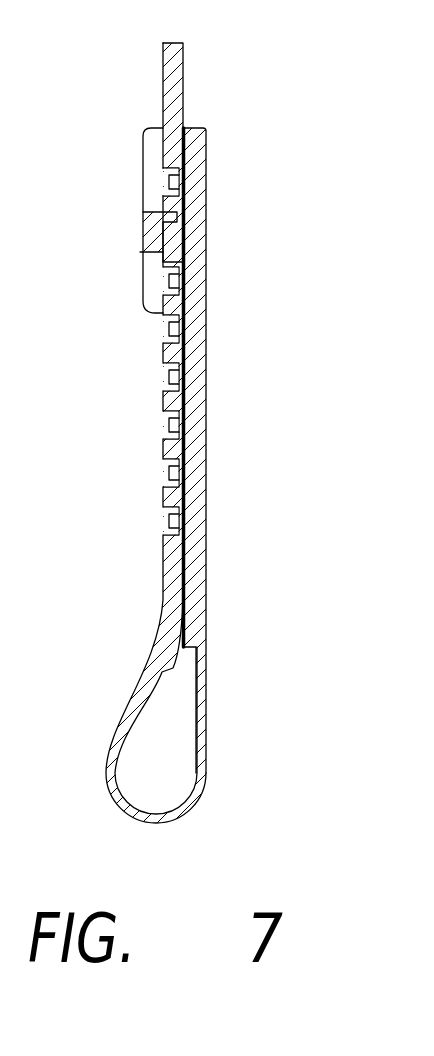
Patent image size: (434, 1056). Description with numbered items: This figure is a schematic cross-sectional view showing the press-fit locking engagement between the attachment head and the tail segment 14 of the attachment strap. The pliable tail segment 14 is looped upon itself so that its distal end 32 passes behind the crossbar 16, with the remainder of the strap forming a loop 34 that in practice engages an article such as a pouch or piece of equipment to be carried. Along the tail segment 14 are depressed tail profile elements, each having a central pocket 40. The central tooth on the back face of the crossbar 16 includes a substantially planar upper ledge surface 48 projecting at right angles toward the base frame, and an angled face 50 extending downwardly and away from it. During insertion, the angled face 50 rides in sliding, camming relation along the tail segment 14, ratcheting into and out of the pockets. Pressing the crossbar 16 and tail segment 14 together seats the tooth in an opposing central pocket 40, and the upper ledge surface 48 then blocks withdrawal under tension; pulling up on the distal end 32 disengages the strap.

The tail segment 14 is at (165, 495).
The crossbar 16 is at (143, 237).
The distal end 32 is at (163, 82).
The loop 34 is at (177, 781).
The central pocket 40 is at (163, 380).
The upper ledge surface 48 is at (173, 222).
The angled face 50 is at (183, 252).